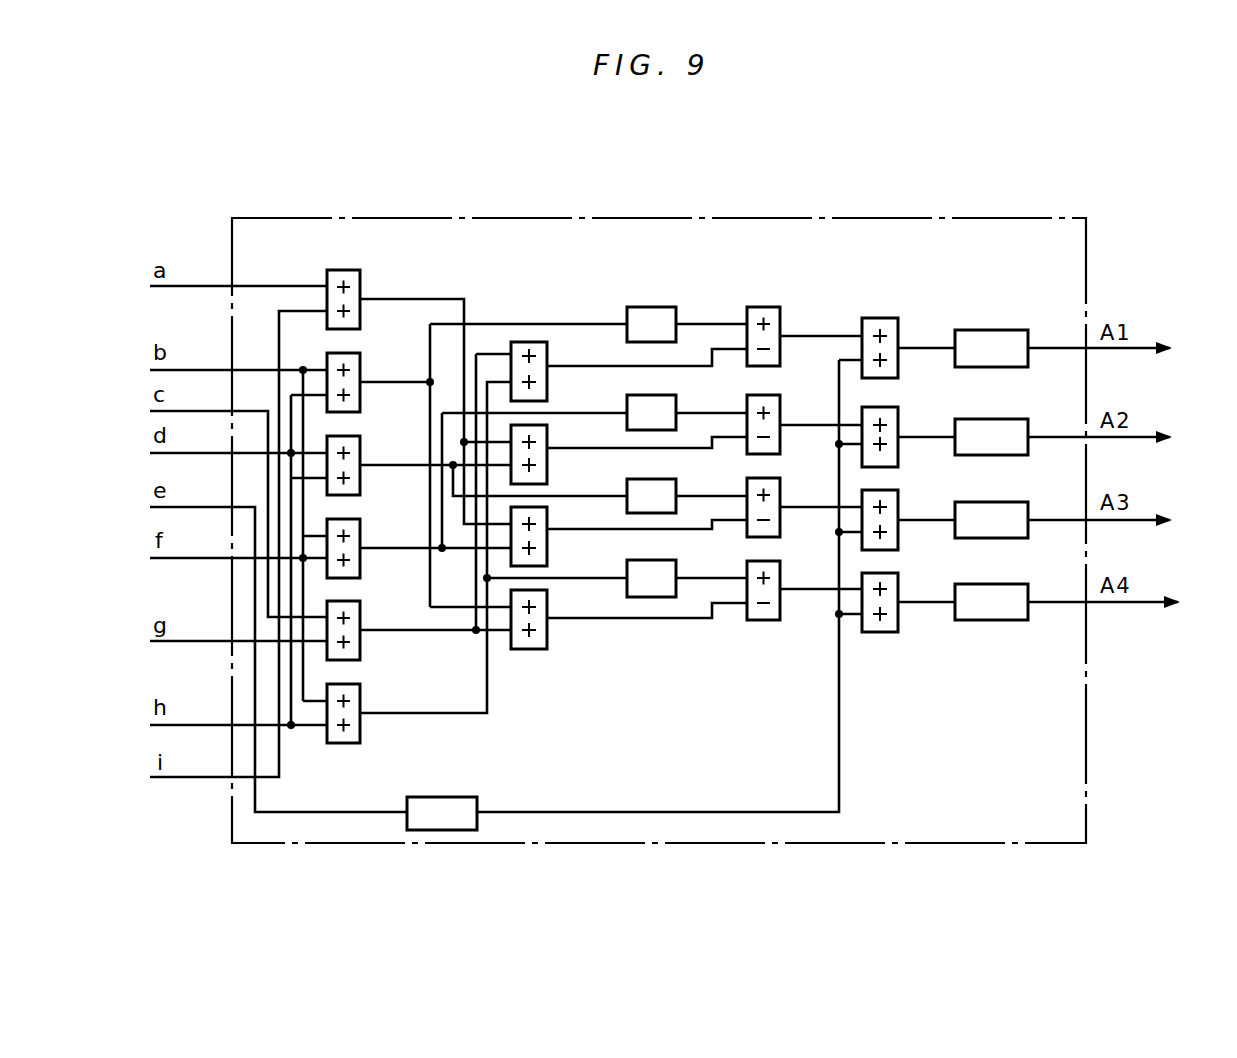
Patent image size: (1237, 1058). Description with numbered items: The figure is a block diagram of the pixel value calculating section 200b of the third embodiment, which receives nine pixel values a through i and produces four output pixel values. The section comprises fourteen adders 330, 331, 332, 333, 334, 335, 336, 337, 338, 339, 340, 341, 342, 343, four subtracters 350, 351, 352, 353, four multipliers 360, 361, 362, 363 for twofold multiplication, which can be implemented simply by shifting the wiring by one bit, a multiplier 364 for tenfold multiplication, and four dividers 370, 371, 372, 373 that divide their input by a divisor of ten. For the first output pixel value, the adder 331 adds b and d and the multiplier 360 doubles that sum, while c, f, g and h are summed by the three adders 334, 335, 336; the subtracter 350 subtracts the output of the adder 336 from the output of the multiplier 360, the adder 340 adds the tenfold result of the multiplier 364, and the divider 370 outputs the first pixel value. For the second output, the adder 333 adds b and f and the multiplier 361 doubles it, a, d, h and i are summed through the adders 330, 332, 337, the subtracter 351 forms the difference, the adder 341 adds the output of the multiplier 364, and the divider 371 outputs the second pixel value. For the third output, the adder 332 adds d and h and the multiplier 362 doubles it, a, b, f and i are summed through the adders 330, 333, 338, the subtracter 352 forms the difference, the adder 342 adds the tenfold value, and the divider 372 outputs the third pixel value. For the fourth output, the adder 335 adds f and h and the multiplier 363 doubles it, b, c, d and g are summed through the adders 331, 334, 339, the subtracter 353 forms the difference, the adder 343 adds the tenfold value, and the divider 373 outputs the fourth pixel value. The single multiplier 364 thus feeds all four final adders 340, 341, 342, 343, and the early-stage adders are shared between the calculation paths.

The pixel value calculating section 200b is at (1040, 218).
The adder 330 is at (350, 270).
The adder 331 is at (345, 353).
The adder 332 is at (345, 436).
The adder 333 is at (345, 519).
The adder 334 is at (345, 601).
The adder 335 is at (345, 684).
The adder 336 is at (547, 378).
The adder 337 is at (547, 461).
The adder 338 is at (547, 543).
The adder 339 is at (548, 641).
The adder 340 is at (885, 318).
The adder 341 is at (880, 407).
The adder 342 is at (880, 490).
The adder 343 is at (898, 632).
The subtracter 350 is at (768, 307).
The subtracter 351 is at (765, 395).
The subtracter 352 is at (762, 478).
The subtracter 353 is at (765, 620).
The multiplier 360 is at (640, 307).
The multiplier 361 is at (676, 400).
The multiplier 362 is at (647, 479).
The multiplier 363 is at (640, 560).
The multiplier 364 is at (470, 797).
The divider 370 is at (1000, 330).
The divider 371 is at (1005, 419).
The divider 372 is at (1005, 502).
The divider 373 is at (1005, 584).